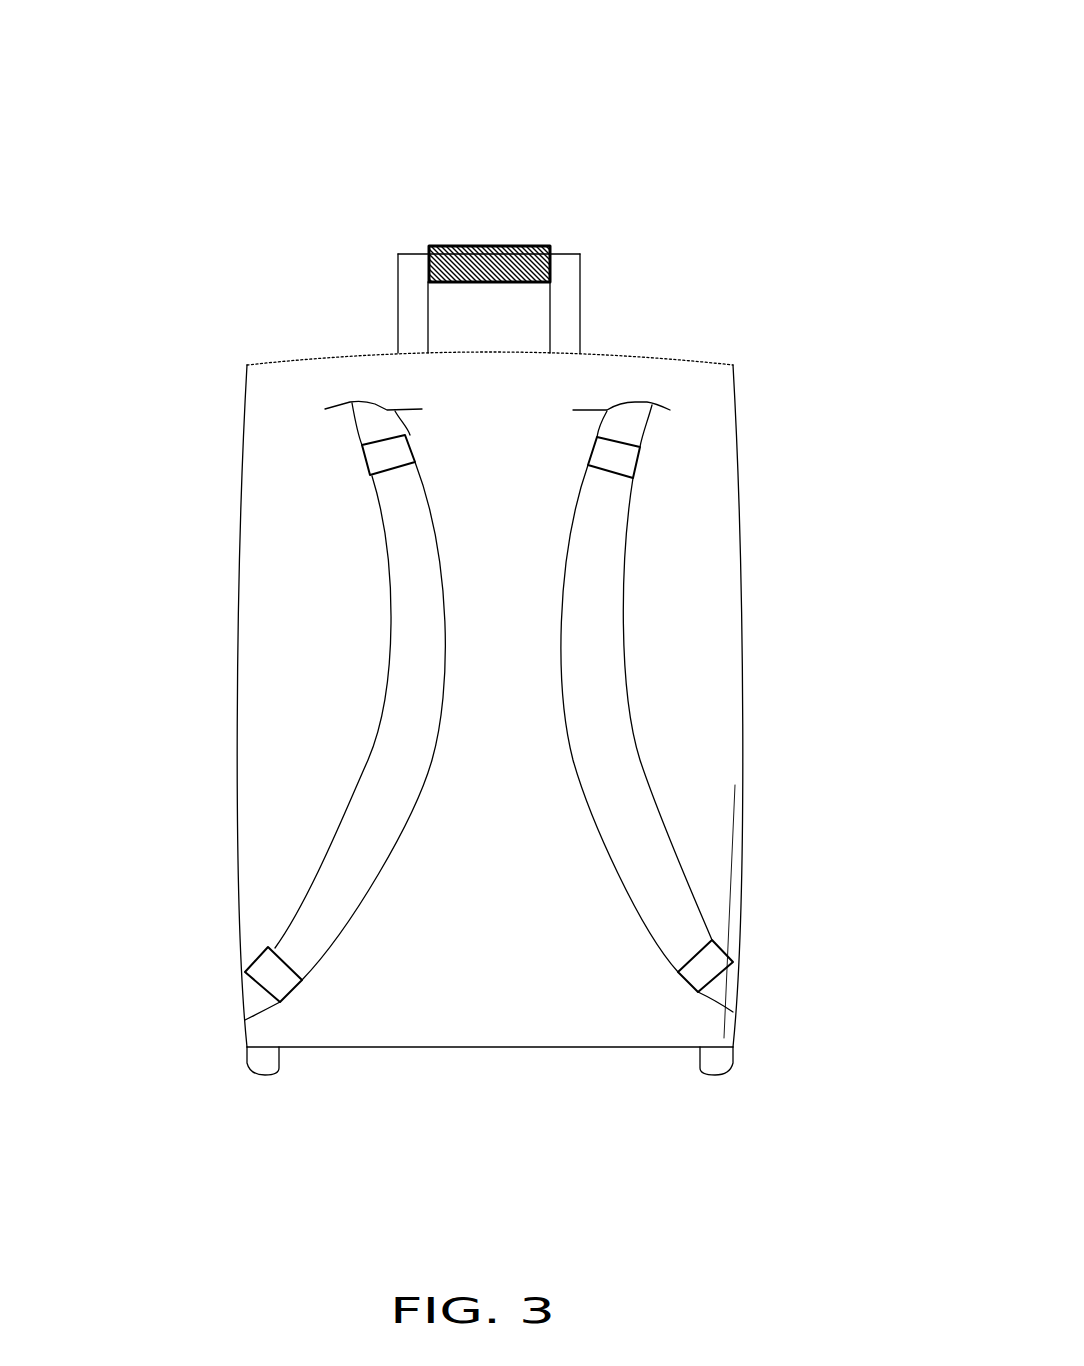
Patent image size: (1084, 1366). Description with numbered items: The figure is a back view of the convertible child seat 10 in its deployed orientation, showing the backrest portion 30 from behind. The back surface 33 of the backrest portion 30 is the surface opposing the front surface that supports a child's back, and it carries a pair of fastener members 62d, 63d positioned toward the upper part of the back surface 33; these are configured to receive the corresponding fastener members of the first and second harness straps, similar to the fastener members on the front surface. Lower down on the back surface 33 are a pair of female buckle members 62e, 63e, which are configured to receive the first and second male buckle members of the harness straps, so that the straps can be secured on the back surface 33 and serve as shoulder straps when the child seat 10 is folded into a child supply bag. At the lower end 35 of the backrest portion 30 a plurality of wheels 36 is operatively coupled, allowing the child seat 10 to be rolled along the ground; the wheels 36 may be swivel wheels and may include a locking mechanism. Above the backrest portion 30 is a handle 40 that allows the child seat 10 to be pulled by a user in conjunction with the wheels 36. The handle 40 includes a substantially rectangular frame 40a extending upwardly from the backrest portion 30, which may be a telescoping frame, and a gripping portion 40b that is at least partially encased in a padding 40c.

The convertible child seat 10 is at (505, 115).
The backrest portion 30 is at (775, 663).
The back surface 33 is at (683, 507).
The lower end 35 is at (473, 1047).
The wheels 36 is at (262, 1060).
The handle 40 is at (635, 276).
The frame 40a is at (410, 305).
The gripping portion 40b is at (420, 252).
The padding 40c is at (515, 247).
The fastener member 62d is at (373, 463).
The female buckle member 62e is at (252, 1003).
The fastener member 63d is at (625, 463).
The female buckle member 63e is at (725, 980).